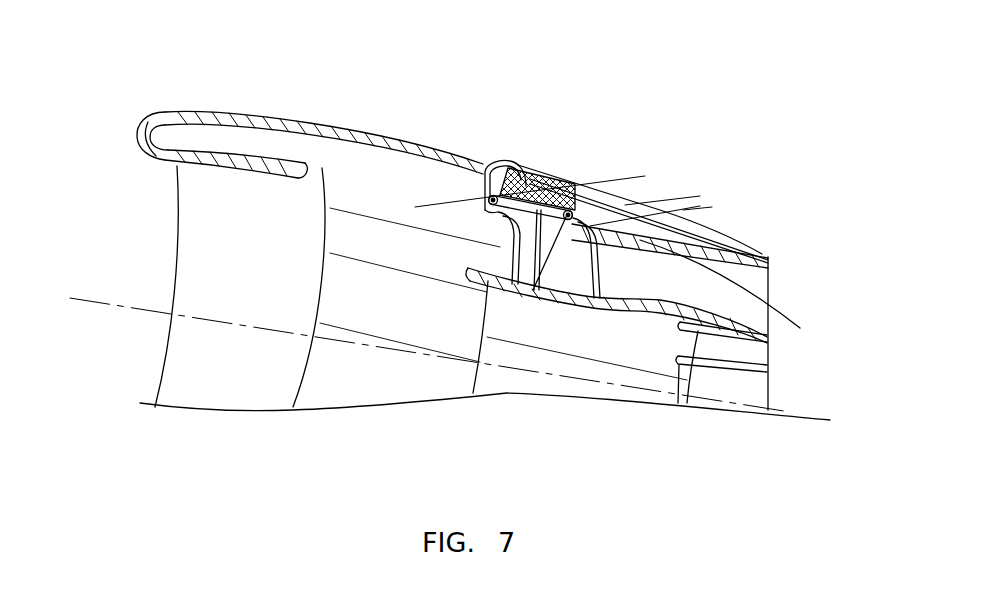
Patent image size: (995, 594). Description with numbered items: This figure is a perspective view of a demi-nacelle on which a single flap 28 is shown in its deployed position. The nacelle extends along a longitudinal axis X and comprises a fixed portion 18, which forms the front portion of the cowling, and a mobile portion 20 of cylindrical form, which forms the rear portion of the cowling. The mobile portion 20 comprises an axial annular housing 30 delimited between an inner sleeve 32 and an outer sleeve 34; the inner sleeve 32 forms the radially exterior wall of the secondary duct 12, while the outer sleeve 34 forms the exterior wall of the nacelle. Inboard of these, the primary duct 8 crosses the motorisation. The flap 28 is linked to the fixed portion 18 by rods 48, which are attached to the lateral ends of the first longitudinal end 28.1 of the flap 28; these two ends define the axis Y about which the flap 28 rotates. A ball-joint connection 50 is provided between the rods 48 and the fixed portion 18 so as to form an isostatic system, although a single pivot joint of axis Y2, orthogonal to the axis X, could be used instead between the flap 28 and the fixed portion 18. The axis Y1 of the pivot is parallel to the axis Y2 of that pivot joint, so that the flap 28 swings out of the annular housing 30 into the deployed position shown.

The fixed portion 18 is at (342, 118).
The rod 48 is at (520, 167).
The first longitudinal end of the flap 28.1 is at (567, 207).
The axial annular housing 30 is at (627, 224).
The outer sleeve 34 is at (717, 222).
The mobile portion 20 is at (775, 240).
The secondary duct 12 is at (757, 283).
The inner sleeve 32 is at (740, 298).
The ball-joint connection 50 is at (480, 203).
The primary duct 8 is at (505, 387).
The flap 28 is at (560, 280).
The axis Y2 is at (630, 178).
The axis Y is at (650, 212).
The axis Y1 is at (675, 220).
The longitudinal axis X is at (797, 415).